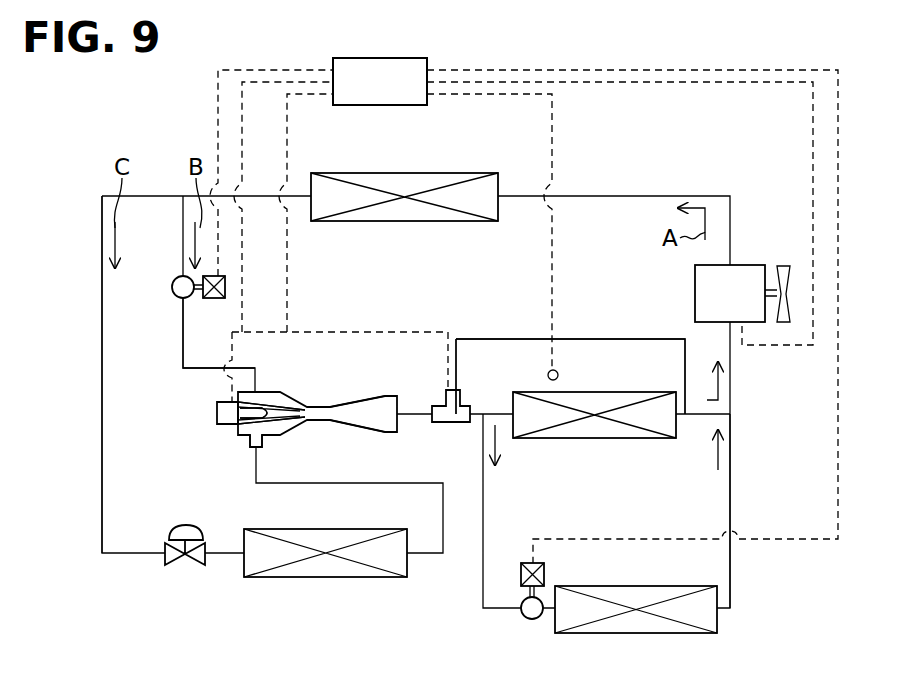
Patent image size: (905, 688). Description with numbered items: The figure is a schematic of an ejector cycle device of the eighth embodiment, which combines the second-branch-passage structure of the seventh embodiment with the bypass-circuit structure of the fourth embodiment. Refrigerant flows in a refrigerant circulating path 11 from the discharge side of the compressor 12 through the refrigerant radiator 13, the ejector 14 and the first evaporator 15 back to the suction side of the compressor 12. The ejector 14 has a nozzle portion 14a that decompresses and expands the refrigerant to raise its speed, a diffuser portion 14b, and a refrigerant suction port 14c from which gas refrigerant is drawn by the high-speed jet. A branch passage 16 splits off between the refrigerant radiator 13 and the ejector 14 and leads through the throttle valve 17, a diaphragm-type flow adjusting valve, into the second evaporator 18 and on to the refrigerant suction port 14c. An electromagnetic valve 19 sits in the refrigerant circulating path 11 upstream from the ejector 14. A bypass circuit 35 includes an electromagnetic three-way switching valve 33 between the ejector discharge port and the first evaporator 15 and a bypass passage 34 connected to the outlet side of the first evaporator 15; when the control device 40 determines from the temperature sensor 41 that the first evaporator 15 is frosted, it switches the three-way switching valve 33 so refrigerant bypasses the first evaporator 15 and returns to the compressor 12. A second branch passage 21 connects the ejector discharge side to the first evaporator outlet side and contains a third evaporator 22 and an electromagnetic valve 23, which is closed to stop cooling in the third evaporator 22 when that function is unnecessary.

The control device 40 is at (395, 58).
The refrigerant radiator 13 is at (392, 173).
The compressor 12 is at (740, 265).
The bypass circuit 35 is at (528, 282).
The electromagnetic three-way switching valve 33 is at (446, 398).
The bypass passage 34 is at (500, 339).
The temperature sensor 41 is at (558, 372).
The first evaporator 15 is at (588, 392).
The electromagnetic valve 19 is at (215, 299).
The refrigerant circulating path 11 is at (183, 342).
The branch passage 16 is at (102, 378).
The ejector 14 is at (318, 395).
The nozzle portion 14a is at (276, 407).
The diffuser portion 14b is at (362, 432).
The refrigerant suction port 14c is at (268, 446).
The second branch passage 21 is at (730, 490).
The throttle valve 17 is at (176, 568).
The second evaporator 18 is at (326, 578).
The electromagnetic valve 23 is at (524, 602).
The third evaporator 22 is at (588, 586).